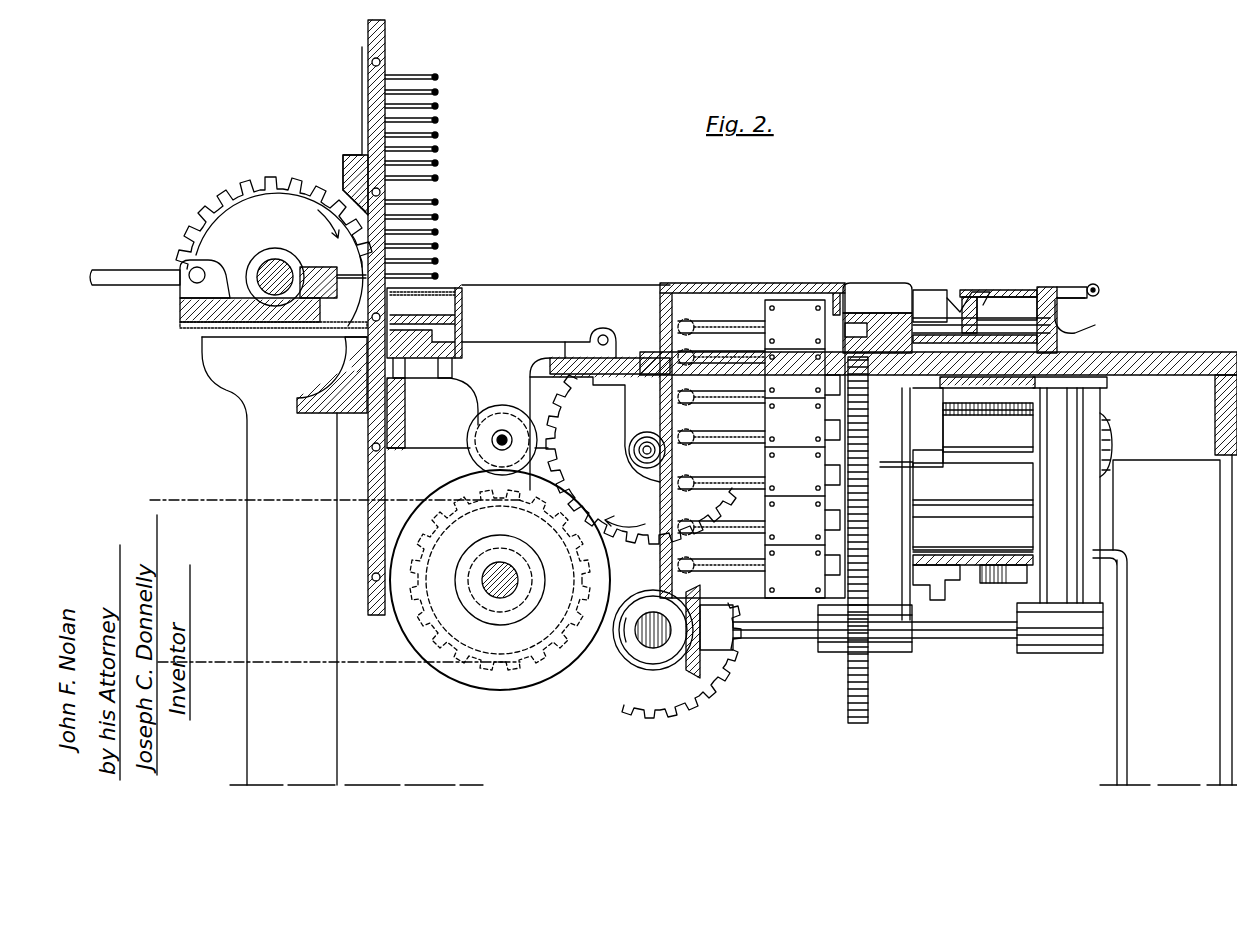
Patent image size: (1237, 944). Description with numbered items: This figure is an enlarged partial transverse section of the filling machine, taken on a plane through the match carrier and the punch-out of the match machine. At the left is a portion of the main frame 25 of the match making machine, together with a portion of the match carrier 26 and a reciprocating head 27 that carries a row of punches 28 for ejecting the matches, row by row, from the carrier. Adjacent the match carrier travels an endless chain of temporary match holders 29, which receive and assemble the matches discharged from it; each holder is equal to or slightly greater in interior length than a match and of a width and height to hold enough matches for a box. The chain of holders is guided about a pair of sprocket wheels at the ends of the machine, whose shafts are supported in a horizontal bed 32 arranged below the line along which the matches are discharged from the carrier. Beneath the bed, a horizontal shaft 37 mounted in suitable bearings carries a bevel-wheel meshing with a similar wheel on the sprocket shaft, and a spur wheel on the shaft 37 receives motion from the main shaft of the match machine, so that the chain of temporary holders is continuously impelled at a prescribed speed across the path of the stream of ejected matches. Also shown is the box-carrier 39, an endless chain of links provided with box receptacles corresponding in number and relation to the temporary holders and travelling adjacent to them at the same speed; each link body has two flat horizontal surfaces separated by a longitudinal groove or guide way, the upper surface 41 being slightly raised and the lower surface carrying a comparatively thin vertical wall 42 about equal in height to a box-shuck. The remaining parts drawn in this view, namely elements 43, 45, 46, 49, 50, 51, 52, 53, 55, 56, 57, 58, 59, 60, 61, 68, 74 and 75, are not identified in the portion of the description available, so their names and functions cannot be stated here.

The main frame 25 is at (258, 462).
The match carrier 26 is at (386, 42).
The reciprocating head 27 is at (180, 312).
The punches 28 is at (353, 272).
The temporary match holders 29 is at (440, 290).
The horizontal bed 32 is at (560, 357).
The horizontal shaft 37 is at (640, 645).
The box-carrier 39 is at (962, 300).
The upper surface 41 is at (950, 585).
The vertical wall 42 is at (1047, 287).
The support 43 is at (920, 290).
The cylinder 45 is at (974, 471).
The pipe connection 46 is at (1112, 438).
The roller 49 is at (640, 456).
The gear 50 is at (601, 459).
The main gear 51 is at (625, 690).
The magazine 52 is at (752, 414).
The plates 53 is at (790, 320).
The piston 55 is at (945, 436).
The piston rod head 56 is at (870, 440).
The gear wheel 57 is at (858, 725).
The shaft 58 is at (785, 640).
The bevel gear 59 is at (700, 675).
The gear 60 is at (655, 672).
The springs 61 is at (721, 446).
The pivot 68 is at (1100, 288).
The arm 74 is at (1065, 298).
The slide 75 is at (995, 320).